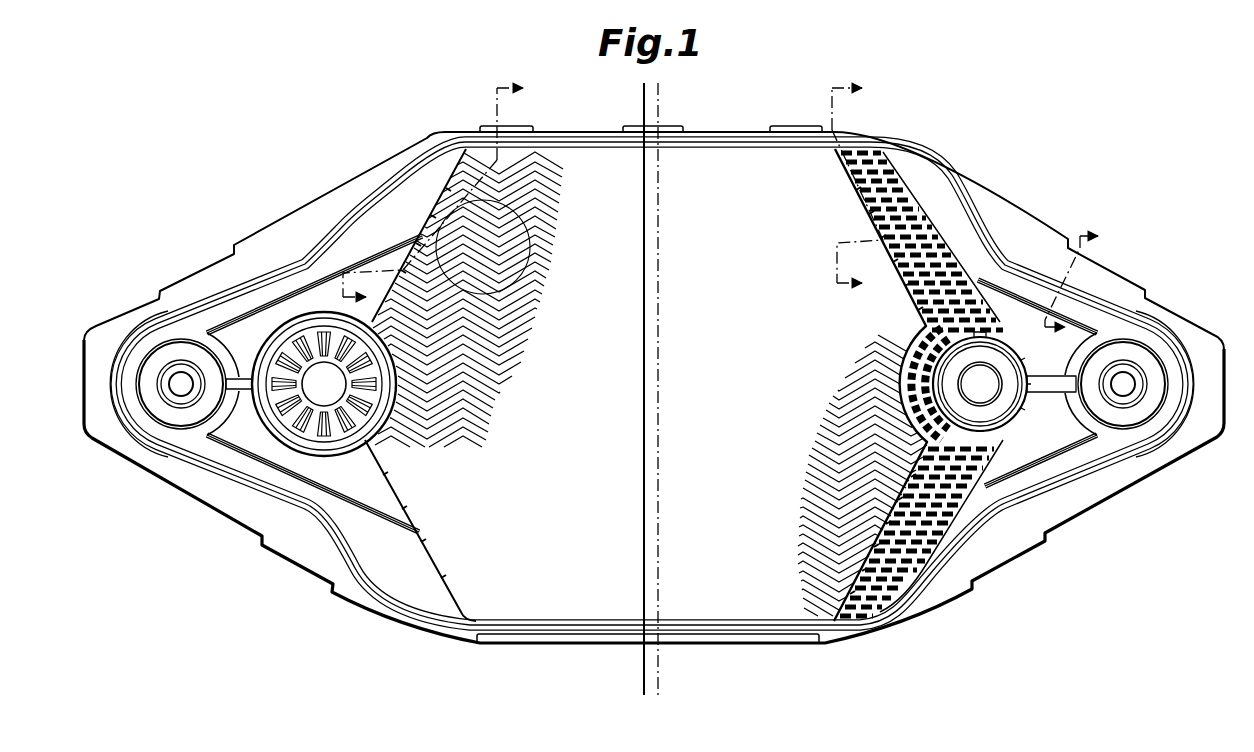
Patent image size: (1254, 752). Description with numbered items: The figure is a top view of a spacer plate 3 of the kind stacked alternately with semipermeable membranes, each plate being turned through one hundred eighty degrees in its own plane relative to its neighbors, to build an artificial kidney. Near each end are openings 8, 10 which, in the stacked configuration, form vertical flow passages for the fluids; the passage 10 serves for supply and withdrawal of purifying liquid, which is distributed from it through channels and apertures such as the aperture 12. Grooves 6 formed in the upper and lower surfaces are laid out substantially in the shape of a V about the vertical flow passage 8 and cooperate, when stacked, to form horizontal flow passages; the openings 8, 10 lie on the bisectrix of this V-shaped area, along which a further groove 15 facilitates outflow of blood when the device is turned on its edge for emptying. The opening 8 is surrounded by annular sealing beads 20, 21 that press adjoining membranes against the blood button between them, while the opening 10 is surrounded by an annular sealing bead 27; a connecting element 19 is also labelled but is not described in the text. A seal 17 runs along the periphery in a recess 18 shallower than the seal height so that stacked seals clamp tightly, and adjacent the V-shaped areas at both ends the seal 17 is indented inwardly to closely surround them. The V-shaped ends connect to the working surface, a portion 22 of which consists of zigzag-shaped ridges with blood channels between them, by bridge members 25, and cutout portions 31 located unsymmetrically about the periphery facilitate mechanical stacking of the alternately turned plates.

The spacer plate 3 is at (302, 172).
The grooves 6 is at (283, 298).
The opening 8 is at (172, 384).
The opening 10 is at (335, 395).
The channel and aperture 12 is at (1020, 410).
The groove 15 is at (1050, 375).
The seal 17 is at (375, 597).
The recess 18 is at (403, 617).
The connecting link 19 is at (250, 377).
The annular sealing bead 20 is at (170, 345).
The annular sealing bead 21 is at (163, 362).
The portion of the working surface 22 is at (545, 256).
The bridge members 25 is at (387, 477).
The annular sealing bead 27 is at (1013, 420).
The cutout portions 31 is at (200, 275).